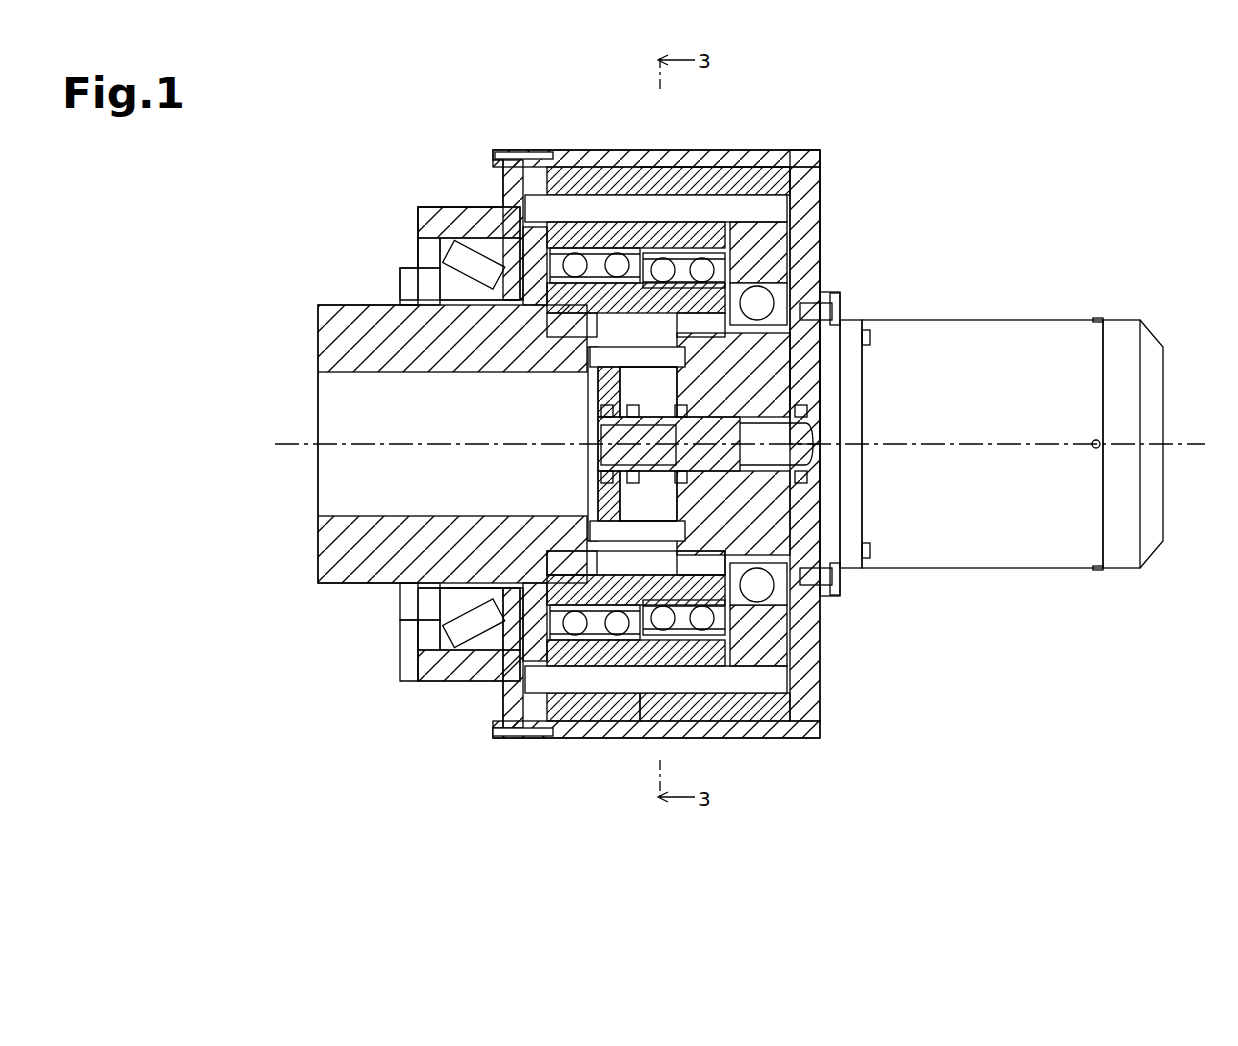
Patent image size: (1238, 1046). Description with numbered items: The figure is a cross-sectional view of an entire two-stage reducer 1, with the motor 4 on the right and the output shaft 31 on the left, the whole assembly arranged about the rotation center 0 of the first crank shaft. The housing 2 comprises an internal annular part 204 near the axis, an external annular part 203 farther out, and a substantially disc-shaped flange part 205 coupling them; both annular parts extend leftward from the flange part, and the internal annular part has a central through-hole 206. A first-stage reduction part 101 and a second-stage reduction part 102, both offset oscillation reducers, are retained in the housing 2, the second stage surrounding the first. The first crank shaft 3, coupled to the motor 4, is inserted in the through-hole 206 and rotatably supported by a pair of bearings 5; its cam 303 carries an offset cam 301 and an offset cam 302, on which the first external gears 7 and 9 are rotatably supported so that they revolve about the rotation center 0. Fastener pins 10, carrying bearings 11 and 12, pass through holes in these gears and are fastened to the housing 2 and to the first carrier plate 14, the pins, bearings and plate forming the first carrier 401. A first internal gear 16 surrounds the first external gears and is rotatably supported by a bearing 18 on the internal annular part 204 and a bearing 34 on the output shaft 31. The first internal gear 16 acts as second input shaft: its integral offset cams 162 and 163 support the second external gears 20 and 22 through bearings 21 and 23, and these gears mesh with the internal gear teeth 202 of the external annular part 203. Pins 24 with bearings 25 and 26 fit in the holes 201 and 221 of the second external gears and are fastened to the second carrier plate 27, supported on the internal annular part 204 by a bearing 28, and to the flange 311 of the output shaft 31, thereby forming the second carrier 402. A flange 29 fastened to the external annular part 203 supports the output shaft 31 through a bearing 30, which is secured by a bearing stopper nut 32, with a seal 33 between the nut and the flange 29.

The axis 0 is at (1197, 446).
The reducer 1 is at (284, 121).
The housing 2 is at (815, 247).
The first crank shaft 3 is at (852, 330).
The motor 4 is at (850, 417).
The bearings 5 is at (700, 378).
The first external gear 7 is at (590, 512).
The first external gear 9 is at (690, 556).
The fastener pin 10 is at (590, 355).
The bearing 11 is at (598, 380).
The bearing 12 is at (598, 430).
The first carrier plate 14 is at (600, 405).
The first internal gear 16 is at (717, 630).
The bearing 18 is at (795, 582).
The second external gear 20 is at (608, 172).
The bearing 21 is at (490, 172).
The second external gear 22 is at (640, 168).
The bearing 23 is at (750, 160).
The pin 24 is at (767, 683).
The bearing 25 is at (590, 705).
The bearing 26 is at (655, 718).
The second carrier plate 27 is at (815, 730).
The bearing 28 is at (818, 240).
The flange 29 is at (490, 215).
The bearing 30 is at (470, 245).
The output shaft 31 is at (325, 342).
The bearing stopper nut 32 is at (410, 292).
The seal 33 is at (418, 258).
The bearing 34 is at (440, 596).
The first-stage reduction part 101 is at (690, 400).
The second-stage reduction part 102 is at (711, 148).
The offset cam 162 is at (608, 248).
The offset cam 163 is at (678, 250).
The holes 201 is at (565, 712).
The internal gear teeth 202 is at (683, 142).
The external annular part 203 is at (572, 142).
The internal annular part 204 is at (810, 520).
The flange part 205 is at (812, 282).
The through-hole 206 is at (736, 486).
The holes 221 is at (664, 718).
The offset cam 301 is at (600, 460).
The offset cam 302 is at (600, 472).
The cam 303 is at (450, 465).
The flange 311 is at (508, 225).
The first carrier 401 is at (525, 378).
The second carrier 402 is at (920, 740).